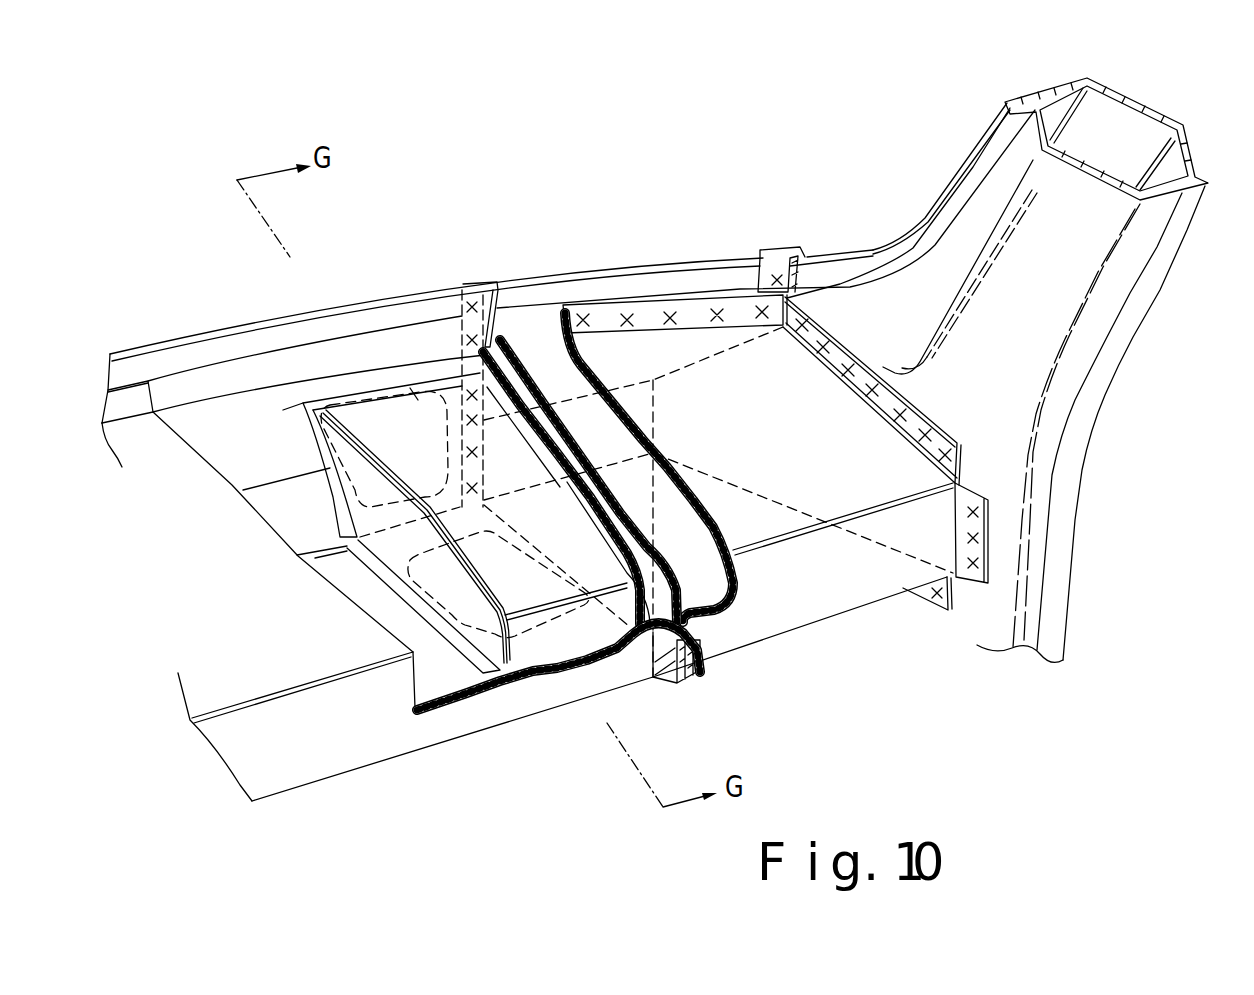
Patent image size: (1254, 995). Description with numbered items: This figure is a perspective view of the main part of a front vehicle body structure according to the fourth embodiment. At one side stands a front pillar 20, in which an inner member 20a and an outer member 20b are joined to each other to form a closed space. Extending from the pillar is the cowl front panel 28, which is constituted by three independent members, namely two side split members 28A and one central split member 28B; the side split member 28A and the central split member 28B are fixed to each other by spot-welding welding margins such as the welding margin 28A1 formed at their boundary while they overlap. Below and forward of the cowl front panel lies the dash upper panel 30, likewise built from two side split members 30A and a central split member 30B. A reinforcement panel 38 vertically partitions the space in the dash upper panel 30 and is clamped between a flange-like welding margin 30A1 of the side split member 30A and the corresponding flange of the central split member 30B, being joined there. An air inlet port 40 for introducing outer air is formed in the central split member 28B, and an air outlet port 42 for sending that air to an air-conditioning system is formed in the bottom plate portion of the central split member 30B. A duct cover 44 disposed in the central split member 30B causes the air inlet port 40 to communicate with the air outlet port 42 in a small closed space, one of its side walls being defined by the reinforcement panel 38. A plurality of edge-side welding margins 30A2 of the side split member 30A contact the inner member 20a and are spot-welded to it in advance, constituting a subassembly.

The front pillar 20 is at (1082, 242).
The inner member 20a is at (1035, 176).
The outer member 20b is at (1125, 115).
The cowl front panel 28 is at (340, 297).
The side split member 28A is at (548, 360).
The welding margin 28A1 is at (707, 663).
The central split member 28B is at (256, 396).
The dash upper panel 30 is at (880, 578).
The side split member 30A is at (843, 607).
The welding margin 30A1 is at (680, 684).
The edge-side welding margin 30A2 is at (898, 390).
The central split member 30B is at (402, 732).
The reinforcement panel 38 is at (497, 345).
The air inlet port 40 is at (412, 400).
The air outlet port 42 is at (565, 612).
The duct cover 44 is at (538, 640).